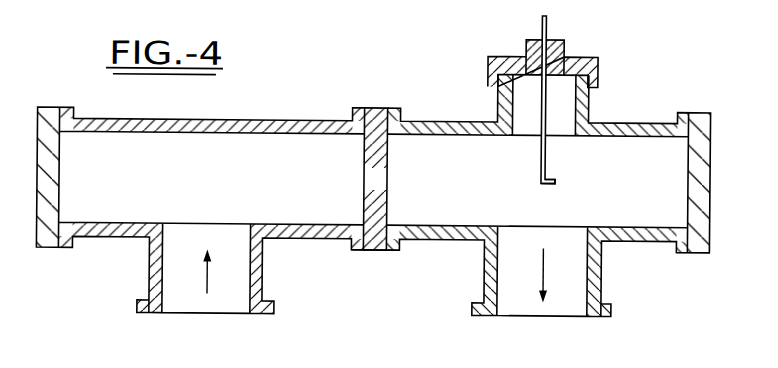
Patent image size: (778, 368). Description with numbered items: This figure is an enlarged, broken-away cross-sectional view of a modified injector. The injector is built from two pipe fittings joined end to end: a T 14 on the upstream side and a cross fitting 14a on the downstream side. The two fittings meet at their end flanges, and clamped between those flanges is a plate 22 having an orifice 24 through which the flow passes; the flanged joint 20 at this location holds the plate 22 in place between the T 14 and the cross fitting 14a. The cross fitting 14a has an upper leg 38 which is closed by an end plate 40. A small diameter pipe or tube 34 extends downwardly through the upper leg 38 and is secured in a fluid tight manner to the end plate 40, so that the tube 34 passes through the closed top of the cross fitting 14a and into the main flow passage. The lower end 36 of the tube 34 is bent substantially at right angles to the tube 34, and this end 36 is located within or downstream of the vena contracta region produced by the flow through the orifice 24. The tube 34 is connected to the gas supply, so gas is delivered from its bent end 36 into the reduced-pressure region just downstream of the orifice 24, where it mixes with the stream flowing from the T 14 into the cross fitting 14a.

The T 14 is at (228, 121).
The cross fitting 14a is at (615, 122).
The flange gasket 20 is at (353, 246).
The plate 22 is at (376, 250).
The orifice 24 is at (373, 179).
The pipe or tube 34 is at (545, 112).
The end of tube 36 is at (556, 181).
The upper leg 38 is at (586, 83).
The end plate 40 is at (576, 57).